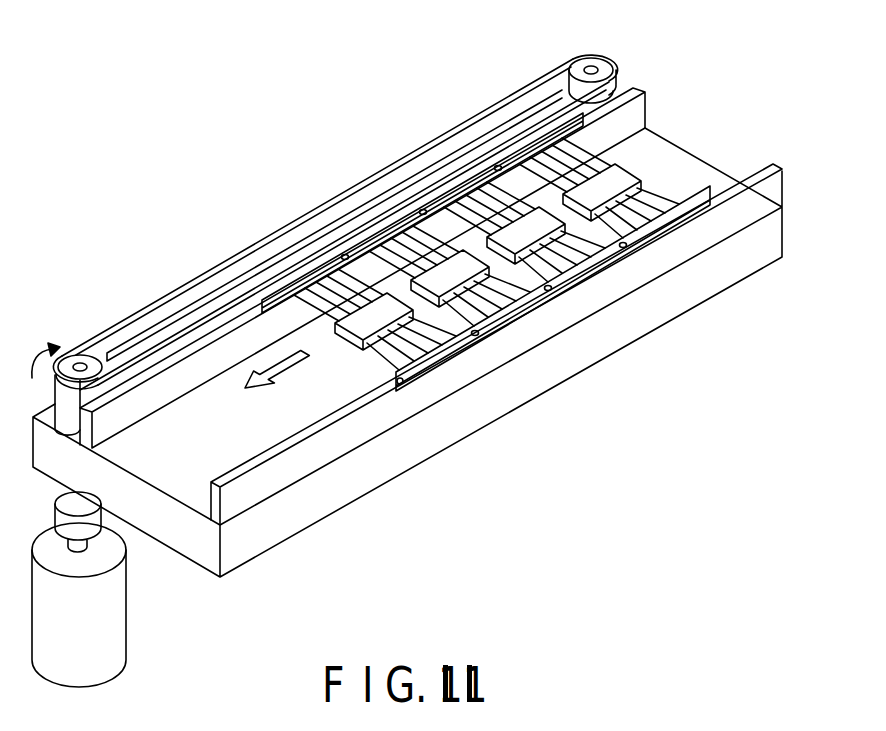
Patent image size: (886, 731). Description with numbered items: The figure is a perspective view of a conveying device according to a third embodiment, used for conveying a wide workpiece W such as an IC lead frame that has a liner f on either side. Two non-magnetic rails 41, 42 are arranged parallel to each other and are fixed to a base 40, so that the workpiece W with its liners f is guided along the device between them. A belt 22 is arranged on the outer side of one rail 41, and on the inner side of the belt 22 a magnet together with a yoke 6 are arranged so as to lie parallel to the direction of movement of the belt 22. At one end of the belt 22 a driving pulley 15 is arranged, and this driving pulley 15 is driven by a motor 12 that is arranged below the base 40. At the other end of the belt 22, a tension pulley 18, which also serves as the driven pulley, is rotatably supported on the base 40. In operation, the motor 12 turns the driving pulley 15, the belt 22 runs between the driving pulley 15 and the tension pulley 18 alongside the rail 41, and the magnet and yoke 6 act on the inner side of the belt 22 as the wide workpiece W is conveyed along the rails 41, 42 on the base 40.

The yoke 6 is at (203, 305).
The motor 12 is at (120, 617).
The driving pulley 15 is at (83, 356).
The tension pulley 18 is at (575, 62).
The belt 22 is at (283, 222).
The base 40 is at (257, 547).
The non-magnetic rail 41 is at (137, 410).
The non-magnetic rail 42 is at (295, 473).
The liner f is at (392, 230).
The workpiece W is at (562, 308).